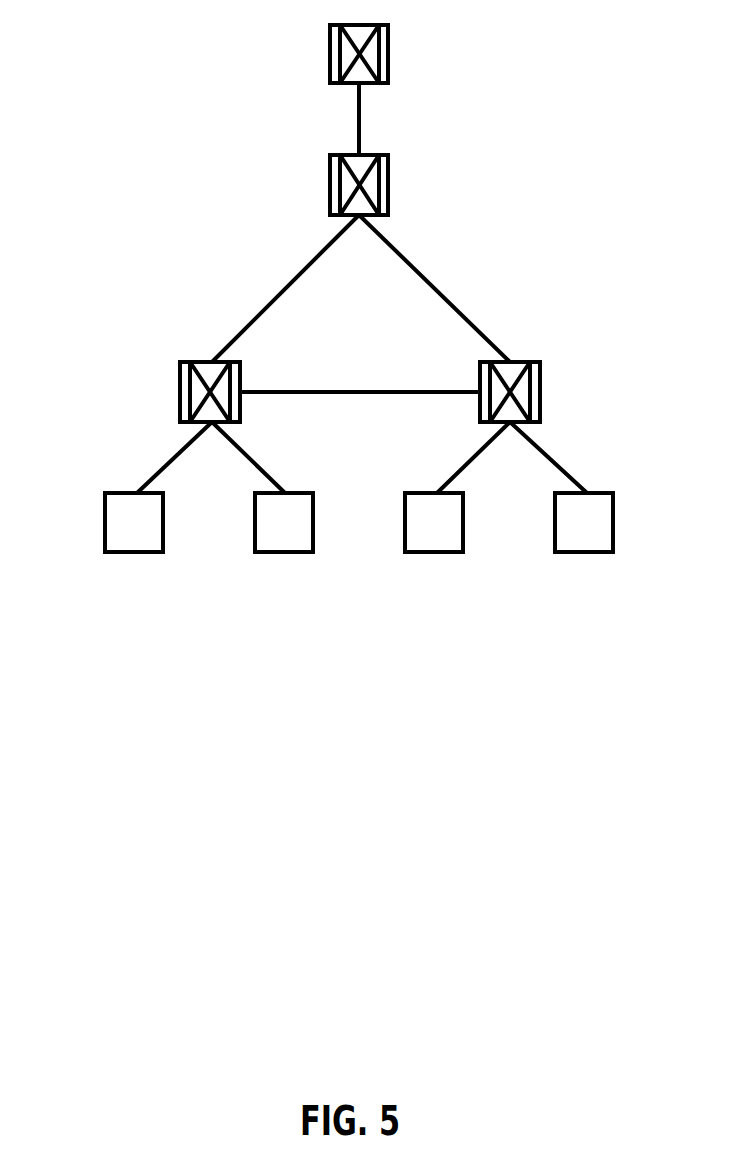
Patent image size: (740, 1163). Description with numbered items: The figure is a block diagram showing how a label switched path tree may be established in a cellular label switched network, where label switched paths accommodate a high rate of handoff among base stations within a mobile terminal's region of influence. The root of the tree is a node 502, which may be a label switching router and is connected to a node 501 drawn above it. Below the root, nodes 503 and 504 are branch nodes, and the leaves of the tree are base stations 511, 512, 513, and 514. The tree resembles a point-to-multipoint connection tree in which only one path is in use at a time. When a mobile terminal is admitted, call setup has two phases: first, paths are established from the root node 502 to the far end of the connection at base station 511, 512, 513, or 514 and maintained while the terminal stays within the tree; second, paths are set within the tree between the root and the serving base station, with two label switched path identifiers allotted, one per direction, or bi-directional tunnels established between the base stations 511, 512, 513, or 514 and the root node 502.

The node 501 is at (390, 50).
The root node 502 is at (390, 182).
The branch node 503 is at (540, 390).
The branch node 504 is at (180, 390).
The base station 511 is at (135, 552).
The base station 512 is at (285, 552).
The base station 513 is at (435, 552).
The base station 514 is at (585, 552).